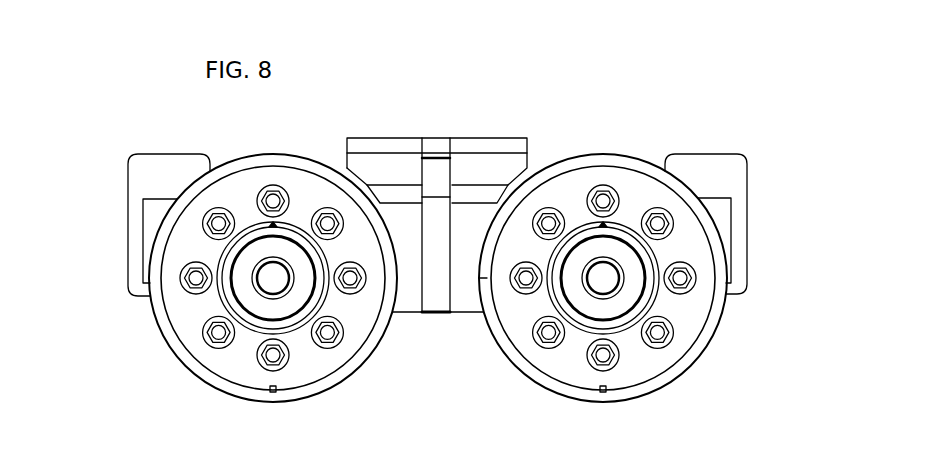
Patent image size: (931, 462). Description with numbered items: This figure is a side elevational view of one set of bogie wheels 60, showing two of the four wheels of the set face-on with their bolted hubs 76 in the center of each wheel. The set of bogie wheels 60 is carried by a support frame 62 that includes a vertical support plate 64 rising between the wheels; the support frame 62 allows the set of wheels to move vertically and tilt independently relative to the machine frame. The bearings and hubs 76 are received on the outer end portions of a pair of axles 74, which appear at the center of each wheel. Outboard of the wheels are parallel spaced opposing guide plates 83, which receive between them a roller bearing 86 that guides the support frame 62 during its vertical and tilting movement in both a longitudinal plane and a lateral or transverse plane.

The bogie wheels 60 is at (525, 342).
The support frame 62 is at (475, 127).
The vertical support plate 64 is at (438, 228).
The axles 74 is at (272, 281).
The hubs 76 is at (247, 276).
The guide plates 83 is at (153, 183).
The roller bearing 86 is at (718, 218).